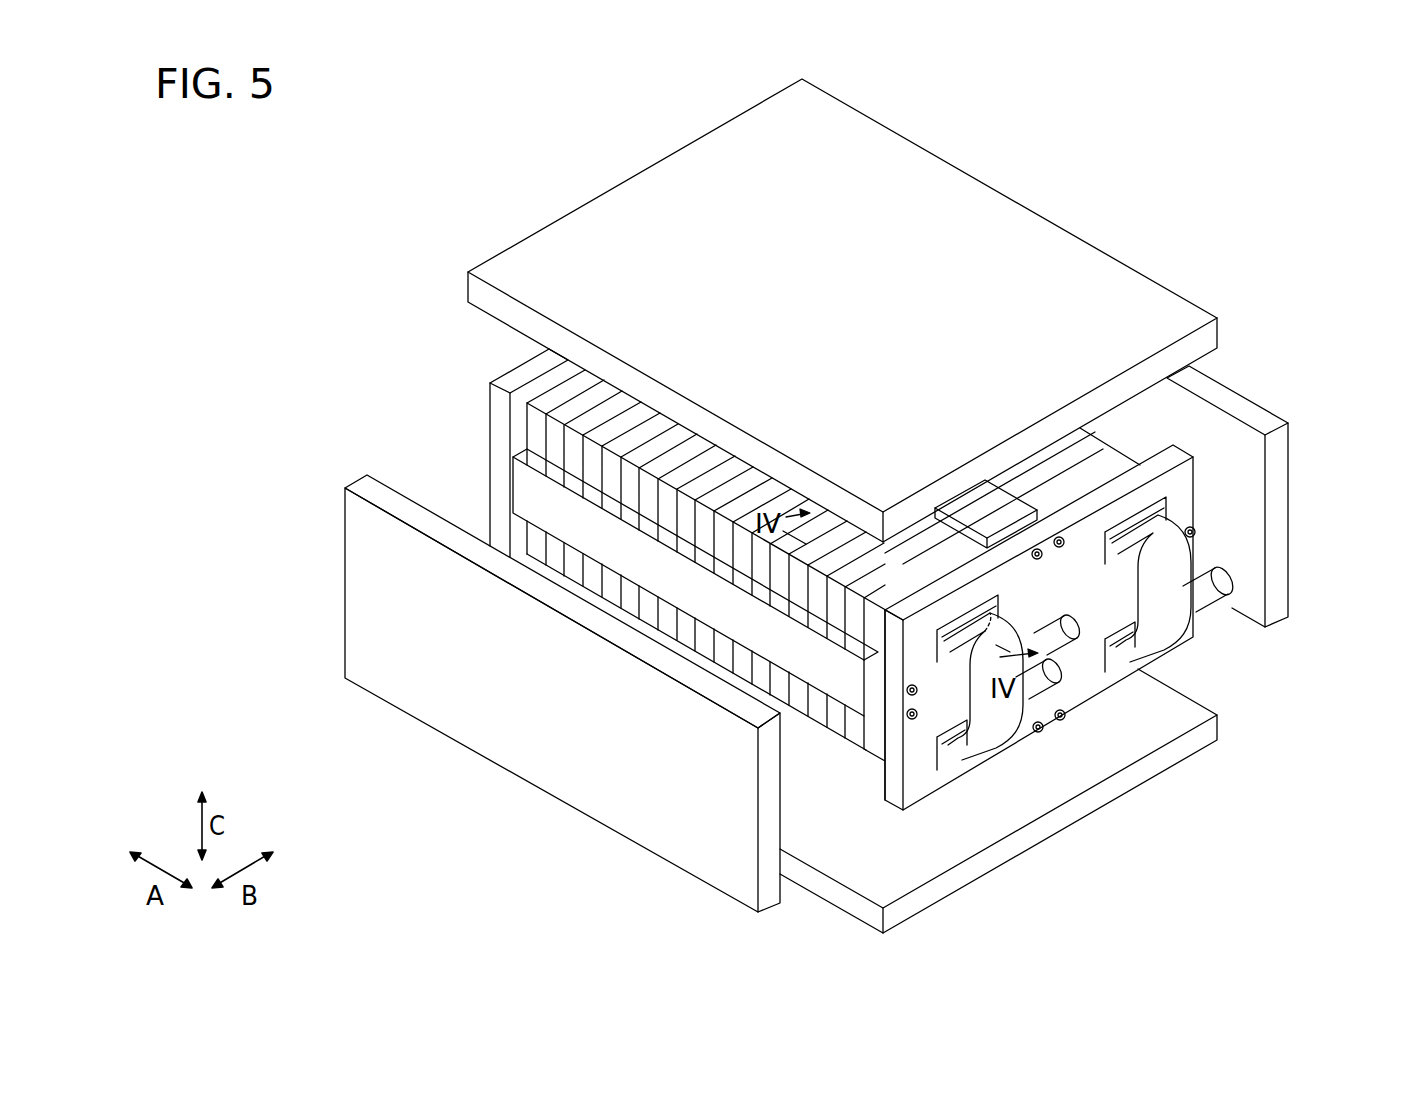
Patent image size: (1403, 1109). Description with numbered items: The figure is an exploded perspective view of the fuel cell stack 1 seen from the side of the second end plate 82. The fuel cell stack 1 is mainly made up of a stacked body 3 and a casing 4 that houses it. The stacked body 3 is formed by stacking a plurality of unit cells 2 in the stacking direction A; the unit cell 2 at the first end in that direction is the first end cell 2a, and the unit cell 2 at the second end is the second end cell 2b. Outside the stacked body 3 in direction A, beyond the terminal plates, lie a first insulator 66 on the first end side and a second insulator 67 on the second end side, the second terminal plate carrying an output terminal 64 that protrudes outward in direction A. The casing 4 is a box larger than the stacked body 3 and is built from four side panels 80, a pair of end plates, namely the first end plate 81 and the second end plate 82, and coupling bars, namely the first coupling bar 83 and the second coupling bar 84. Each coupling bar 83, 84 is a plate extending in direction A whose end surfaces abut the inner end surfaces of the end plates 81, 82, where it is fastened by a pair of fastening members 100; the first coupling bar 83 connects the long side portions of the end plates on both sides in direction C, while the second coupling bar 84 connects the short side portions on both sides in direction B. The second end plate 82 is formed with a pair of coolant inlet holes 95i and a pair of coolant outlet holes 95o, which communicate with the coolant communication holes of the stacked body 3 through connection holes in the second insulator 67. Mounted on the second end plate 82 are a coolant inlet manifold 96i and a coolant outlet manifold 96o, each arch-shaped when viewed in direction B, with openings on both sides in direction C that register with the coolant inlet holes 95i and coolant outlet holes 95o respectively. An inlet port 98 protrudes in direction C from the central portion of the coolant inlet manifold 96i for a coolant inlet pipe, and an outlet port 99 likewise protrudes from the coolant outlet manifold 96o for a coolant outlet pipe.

The fuel cell stack 1 is at (1190, 233).
The unit cell 2 is at (740, 560).
The first end cell 2a is at (548, 553).
The second end cell 2b is at (850, 742).
The stacked body 3 is at (727, 647).
The casing 4 is at (1047, 208).
The output terminal 64 is at (1130, 663).
The first insulator 66 is at (532, 432).
The second insulator 67 is at (866, 617).
The side panel 80 is at (962, 190).
The first end plate 81 is at (500, 382).
The second end plate 82 is at (1128, 655).
The first coupling bar 83 is at (987, 503).
The second coupling bar 84 is at (530, 490).
The coolant inlet hole 95i is at (993, 600).
The coolant outlet hole 95o is at (1190, 532).
The coolant inlet manifold 96i is at (1007, 737).
The coolant outlet manifold 96o is at (1178, 555).
The inlet port 98 is at (1048, 687).
The outlet port 99 is at (1222, 590).
The fastening member 100 is at (1059, 542).